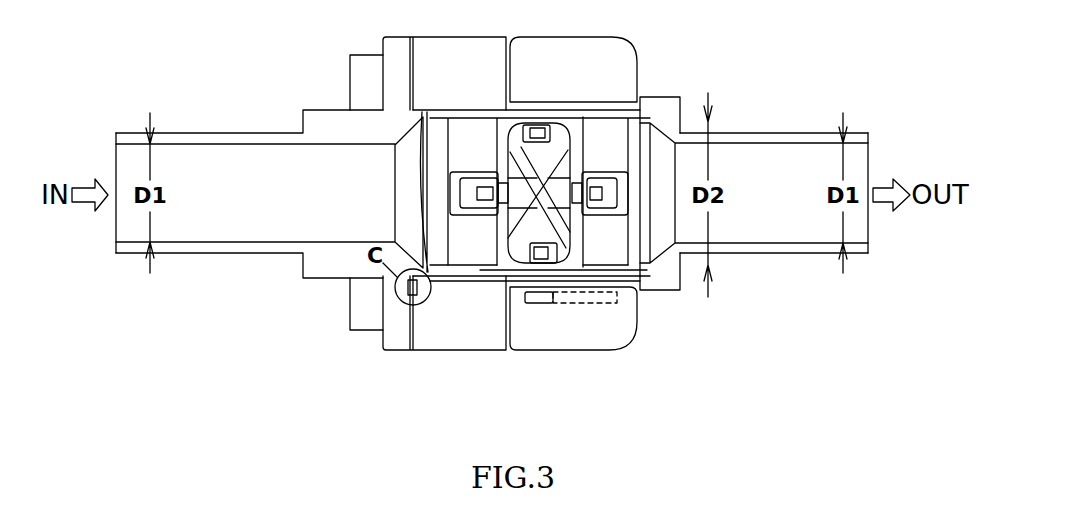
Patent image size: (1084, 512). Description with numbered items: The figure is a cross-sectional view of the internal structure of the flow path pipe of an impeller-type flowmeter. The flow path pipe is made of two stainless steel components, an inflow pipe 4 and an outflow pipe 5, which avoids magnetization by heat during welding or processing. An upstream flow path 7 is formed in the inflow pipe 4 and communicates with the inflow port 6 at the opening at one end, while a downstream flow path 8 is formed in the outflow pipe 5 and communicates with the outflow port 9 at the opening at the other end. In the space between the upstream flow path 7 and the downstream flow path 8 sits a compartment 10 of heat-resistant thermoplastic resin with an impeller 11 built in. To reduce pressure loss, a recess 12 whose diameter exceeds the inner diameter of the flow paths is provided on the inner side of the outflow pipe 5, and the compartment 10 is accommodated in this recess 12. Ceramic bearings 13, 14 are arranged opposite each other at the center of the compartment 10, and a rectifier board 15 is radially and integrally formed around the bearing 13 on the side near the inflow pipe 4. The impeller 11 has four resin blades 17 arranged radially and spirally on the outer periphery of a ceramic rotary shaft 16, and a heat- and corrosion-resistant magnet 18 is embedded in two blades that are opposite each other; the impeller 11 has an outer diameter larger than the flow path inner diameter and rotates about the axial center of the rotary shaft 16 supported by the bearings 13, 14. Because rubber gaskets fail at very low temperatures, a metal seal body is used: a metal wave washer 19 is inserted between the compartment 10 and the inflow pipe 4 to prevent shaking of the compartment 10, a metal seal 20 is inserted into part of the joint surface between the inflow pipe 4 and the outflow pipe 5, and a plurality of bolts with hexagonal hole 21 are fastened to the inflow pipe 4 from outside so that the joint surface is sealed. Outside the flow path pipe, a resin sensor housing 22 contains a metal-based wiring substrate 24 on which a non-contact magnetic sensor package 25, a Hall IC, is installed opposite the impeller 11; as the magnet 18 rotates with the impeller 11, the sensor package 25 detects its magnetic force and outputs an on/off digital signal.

The inflow pipe 4 is at (210, 132).
The outflow pipe 5 is at (773, 133).
The inflow port 6 is at (113, 156).
The upstream flow path 7 is at (250, 208).
The downstream flow path 8 is at (762, 208).
The outflow port 9 is at (870, 157).
The compartment 10 is at (645, 107).
The impeller 11 is at (572, 122).
The recess 12 is at (645, 282).
The bearing 13 is at (477, 172).
The bearing 14 is at (598, 182).
The rectifier board 15 is at (462, 282).
The rotary shaft 16 is at (493, 184).
The blade 17 is at (532, 124).
The magnet 18 is at (543, 124).
The wave washer 19 is at (421, 148).
The metal seal 20 is at (410, 290).
The bolt with hexagonal hole 21 is at (367, 333).
The sensor housing 22 is at (637, 313).
The metal-based wiring substrate 24 is at (593, 304).
The magnetic sensor package 25 is at (540, 304).